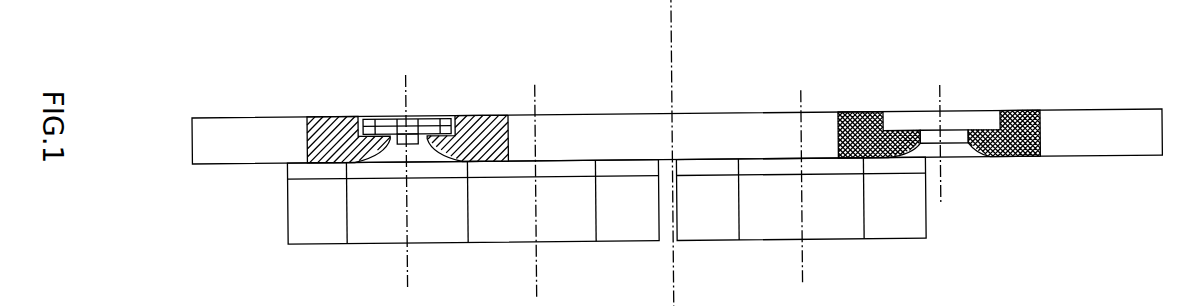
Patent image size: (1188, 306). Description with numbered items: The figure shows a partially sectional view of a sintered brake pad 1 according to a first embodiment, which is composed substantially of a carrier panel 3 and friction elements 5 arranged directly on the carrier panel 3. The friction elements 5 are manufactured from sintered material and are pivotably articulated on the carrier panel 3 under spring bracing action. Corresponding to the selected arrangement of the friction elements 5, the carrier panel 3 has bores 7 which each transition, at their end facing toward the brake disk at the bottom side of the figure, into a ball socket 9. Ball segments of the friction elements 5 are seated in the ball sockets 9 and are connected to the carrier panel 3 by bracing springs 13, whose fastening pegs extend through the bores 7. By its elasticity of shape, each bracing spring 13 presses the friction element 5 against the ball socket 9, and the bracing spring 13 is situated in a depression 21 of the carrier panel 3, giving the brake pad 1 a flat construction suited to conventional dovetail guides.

The sintered brake pad 1 is at (252, 193).
The carrier panel 3 is at (573, 137).
The friction elements 5 is at (360, 224).
The bores 7 is at (955, 136).
The ball socket 9 is at (977, 157).
The bracing spring 13 is at (380, 134).
The depression 21 is at (893, 126).